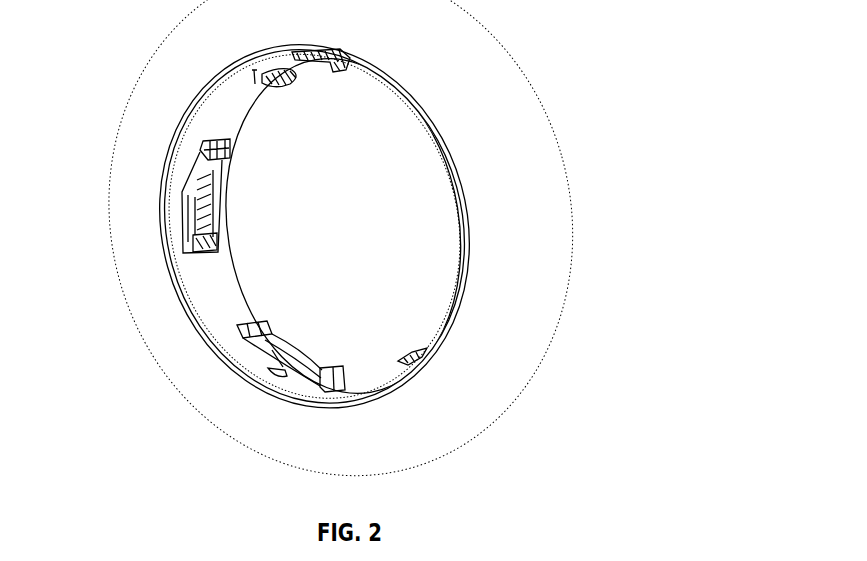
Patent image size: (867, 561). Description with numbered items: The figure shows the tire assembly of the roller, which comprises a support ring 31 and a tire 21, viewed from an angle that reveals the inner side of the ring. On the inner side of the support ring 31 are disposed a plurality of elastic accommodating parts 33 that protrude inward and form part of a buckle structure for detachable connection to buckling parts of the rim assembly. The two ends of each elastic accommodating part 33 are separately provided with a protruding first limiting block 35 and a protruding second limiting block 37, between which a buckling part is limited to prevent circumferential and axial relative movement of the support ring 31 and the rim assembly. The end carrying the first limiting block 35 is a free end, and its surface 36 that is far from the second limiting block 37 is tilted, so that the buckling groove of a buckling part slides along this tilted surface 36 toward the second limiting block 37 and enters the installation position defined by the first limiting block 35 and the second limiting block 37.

The ring body 21 is at (170, 88).
The support ring 31 is at (225, 271).
The elastic accommodating part 33 is at (217, 200).
The first limiting block 35 is at (240, 160).
The tilted surface 36 is at (216, 149).
The second limiting block 37 is at (350, 378).